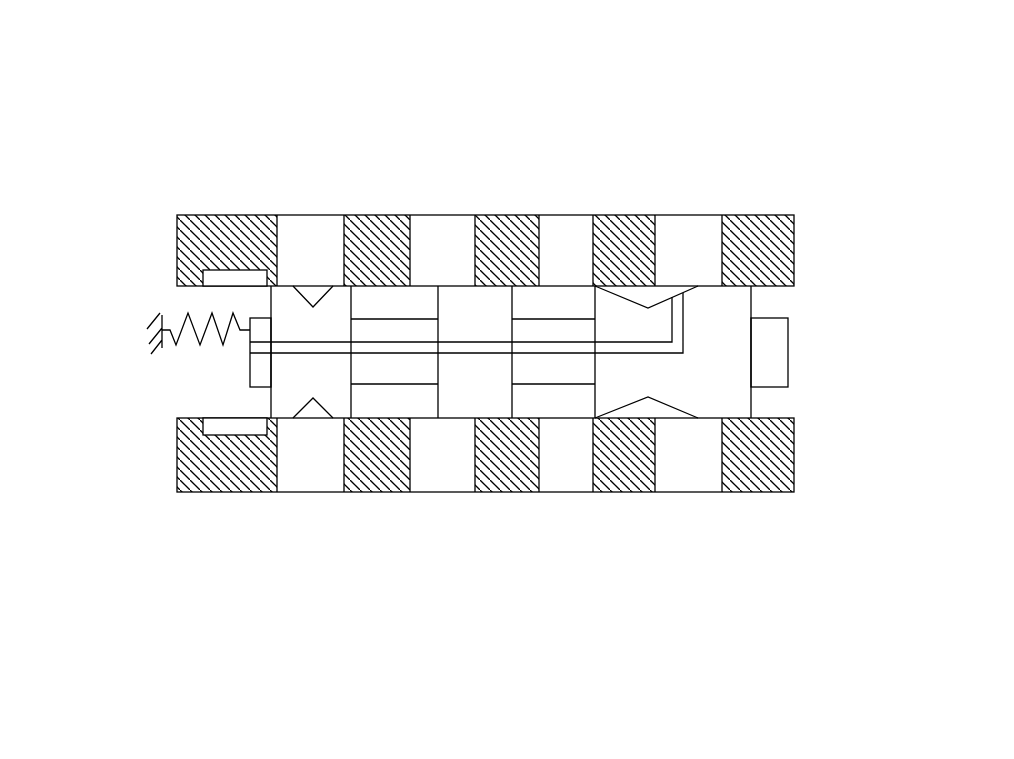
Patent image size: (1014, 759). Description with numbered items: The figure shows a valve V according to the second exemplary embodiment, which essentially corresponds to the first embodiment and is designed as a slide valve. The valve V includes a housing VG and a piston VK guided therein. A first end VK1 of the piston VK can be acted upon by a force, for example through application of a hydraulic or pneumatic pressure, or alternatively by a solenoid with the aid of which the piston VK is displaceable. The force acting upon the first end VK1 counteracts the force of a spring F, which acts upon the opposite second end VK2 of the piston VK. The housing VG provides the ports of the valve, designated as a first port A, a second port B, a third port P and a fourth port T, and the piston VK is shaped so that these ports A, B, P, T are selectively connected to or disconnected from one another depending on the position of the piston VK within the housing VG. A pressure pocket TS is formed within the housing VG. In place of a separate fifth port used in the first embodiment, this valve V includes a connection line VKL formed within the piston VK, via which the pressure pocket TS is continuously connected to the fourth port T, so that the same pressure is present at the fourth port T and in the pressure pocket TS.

The valve V is at (158, 212).
The housing VG is at (765, 232).
The piston VK is at (713, 389).
The first end VK1 is at (788, 340).
The second end VK2 is at (245, 377).
The connection line VKL is at (415, 347).
The spring F is at (178, 312).
The pressure pocket TS is at (225, 428).
The first port A is at (310, 373).
The third port P is at (442, 373).
The second port B is at (566, 373).
The fourth port T is at (688, 373).